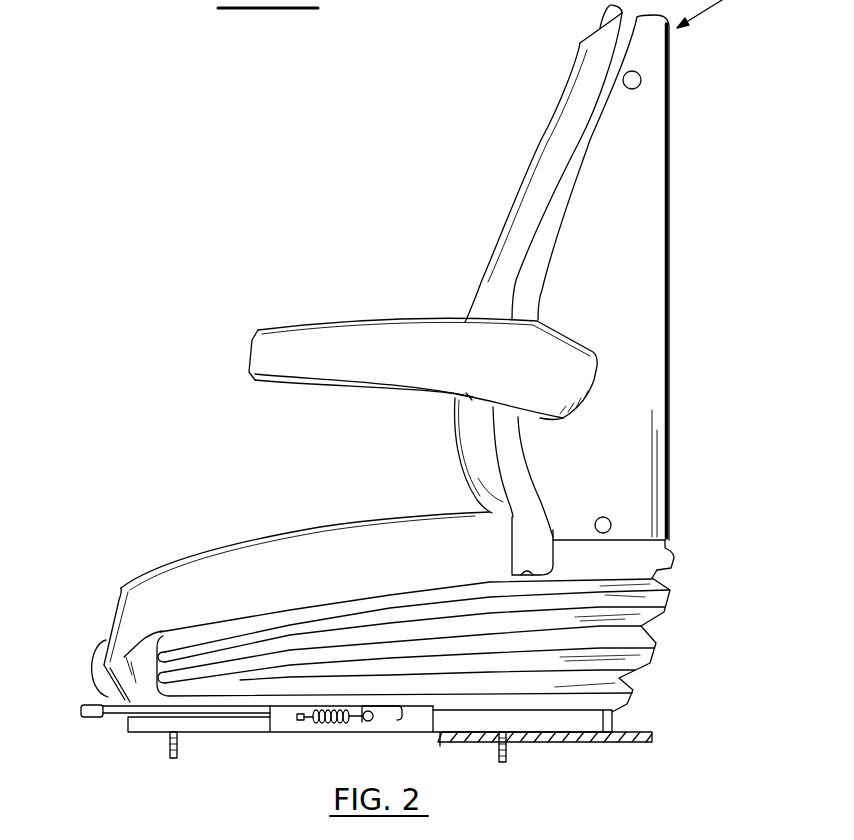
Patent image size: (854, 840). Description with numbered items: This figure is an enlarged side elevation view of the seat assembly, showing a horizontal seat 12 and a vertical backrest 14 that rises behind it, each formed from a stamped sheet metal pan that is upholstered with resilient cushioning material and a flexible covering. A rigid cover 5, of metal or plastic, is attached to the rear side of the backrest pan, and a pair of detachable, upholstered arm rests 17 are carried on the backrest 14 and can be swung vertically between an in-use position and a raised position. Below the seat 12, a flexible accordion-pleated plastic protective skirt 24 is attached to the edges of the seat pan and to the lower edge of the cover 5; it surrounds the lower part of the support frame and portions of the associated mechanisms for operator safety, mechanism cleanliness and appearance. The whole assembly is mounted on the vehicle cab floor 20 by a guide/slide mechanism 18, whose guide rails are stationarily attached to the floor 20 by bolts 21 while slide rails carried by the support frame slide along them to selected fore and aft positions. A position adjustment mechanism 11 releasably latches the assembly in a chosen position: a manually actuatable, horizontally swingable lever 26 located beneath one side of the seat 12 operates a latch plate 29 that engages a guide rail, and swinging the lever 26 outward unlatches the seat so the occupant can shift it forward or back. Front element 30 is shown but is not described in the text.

The rigid cover 5 is at (658, 223).
The backrest 14 is at (547, 140).
The arm rests 17 is at (363, 322).
The seat 12 is at (243, 537).
The protective skirt 24 is at (670, 593).
The front bumper 30 is at (96, 652).
The lever 26 is at (93, 703).
The guide/slide mechanism 18 is at (118, 729).
The bolts 21 is at (170, 750).
The latch plate 29 is at (297, 706).
The position adjustment mechanism 11 is at (347, 741).
The cab floor 20 is at (594, 737).